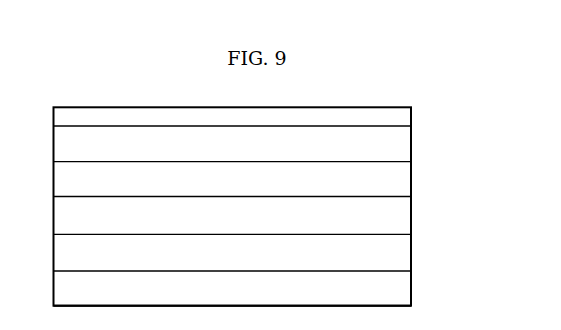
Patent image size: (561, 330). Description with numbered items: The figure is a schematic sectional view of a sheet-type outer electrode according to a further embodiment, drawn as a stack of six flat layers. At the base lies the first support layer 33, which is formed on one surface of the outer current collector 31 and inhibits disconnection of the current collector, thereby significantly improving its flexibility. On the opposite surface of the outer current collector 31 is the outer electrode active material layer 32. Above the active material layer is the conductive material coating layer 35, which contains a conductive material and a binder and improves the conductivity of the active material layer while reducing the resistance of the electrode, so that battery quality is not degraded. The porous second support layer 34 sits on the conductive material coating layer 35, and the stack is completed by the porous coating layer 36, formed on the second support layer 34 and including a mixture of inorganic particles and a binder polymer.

The porous coating layer 36 is at (413, 116).
The porous second support layer 34 is at (413, 144).
The conductive material coating layer 35 is at (413, 180).
The outer electrode active material layer 32 is at (413, 216).
The outer current collector 31 is at (413, 252).
The first support layer 33 is at (413, 290).